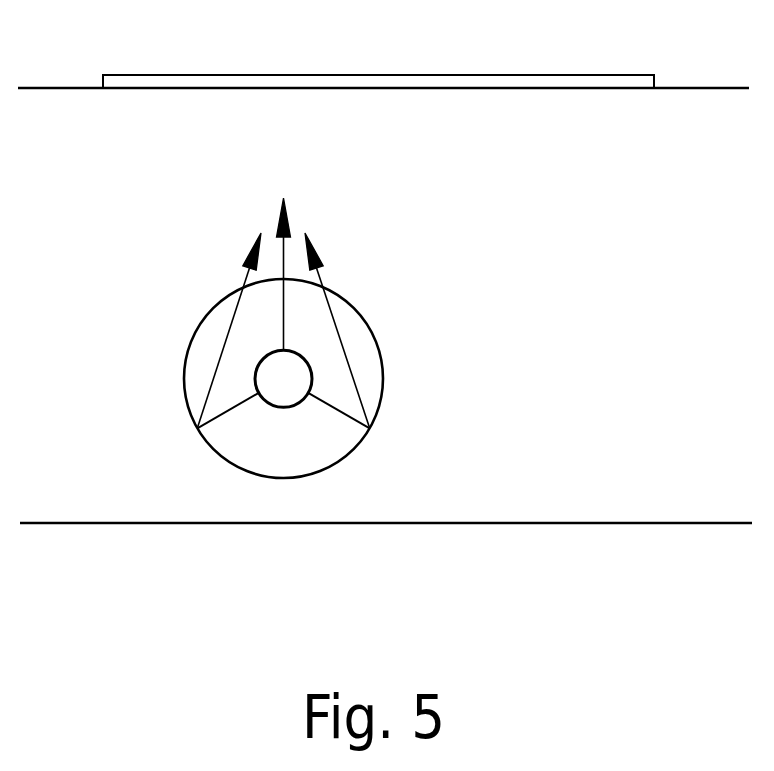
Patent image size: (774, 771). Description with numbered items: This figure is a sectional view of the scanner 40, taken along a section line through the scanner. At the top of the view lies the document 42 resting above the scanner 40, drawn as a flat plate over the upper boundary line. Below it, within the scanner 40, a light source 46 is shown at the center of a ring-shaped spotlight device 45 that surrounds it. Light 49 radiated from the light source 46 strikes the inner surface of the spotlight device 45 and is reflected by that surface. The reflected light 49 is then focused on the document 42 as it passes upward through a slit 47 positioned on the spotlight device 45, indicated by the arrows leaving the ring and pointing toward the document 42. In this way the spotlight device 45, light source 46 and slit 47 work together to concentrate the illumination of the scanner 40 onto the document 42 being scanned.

The scanner 40 is at (563, 627).
The document 42 is at (283, 77).
The spotlight device 45 is at (423, 462).
The light source 46 is at (292, 370).
The slit 47 is at (310, 288).
The light 49 is at (254, 241).